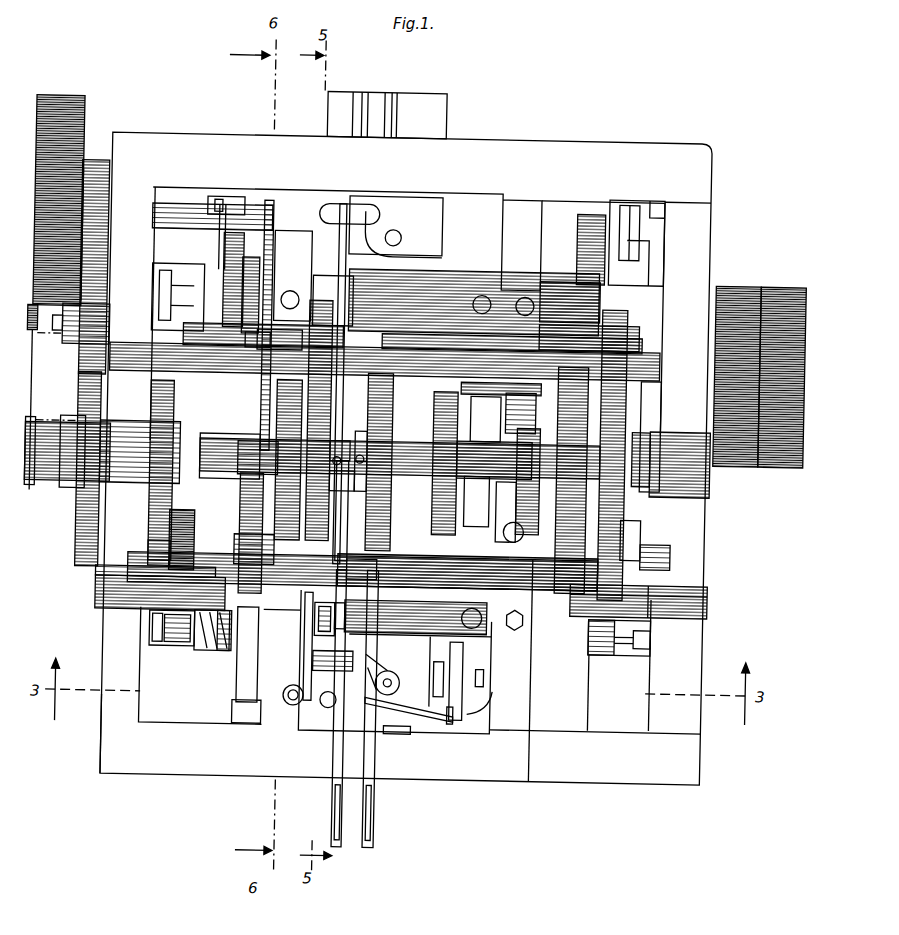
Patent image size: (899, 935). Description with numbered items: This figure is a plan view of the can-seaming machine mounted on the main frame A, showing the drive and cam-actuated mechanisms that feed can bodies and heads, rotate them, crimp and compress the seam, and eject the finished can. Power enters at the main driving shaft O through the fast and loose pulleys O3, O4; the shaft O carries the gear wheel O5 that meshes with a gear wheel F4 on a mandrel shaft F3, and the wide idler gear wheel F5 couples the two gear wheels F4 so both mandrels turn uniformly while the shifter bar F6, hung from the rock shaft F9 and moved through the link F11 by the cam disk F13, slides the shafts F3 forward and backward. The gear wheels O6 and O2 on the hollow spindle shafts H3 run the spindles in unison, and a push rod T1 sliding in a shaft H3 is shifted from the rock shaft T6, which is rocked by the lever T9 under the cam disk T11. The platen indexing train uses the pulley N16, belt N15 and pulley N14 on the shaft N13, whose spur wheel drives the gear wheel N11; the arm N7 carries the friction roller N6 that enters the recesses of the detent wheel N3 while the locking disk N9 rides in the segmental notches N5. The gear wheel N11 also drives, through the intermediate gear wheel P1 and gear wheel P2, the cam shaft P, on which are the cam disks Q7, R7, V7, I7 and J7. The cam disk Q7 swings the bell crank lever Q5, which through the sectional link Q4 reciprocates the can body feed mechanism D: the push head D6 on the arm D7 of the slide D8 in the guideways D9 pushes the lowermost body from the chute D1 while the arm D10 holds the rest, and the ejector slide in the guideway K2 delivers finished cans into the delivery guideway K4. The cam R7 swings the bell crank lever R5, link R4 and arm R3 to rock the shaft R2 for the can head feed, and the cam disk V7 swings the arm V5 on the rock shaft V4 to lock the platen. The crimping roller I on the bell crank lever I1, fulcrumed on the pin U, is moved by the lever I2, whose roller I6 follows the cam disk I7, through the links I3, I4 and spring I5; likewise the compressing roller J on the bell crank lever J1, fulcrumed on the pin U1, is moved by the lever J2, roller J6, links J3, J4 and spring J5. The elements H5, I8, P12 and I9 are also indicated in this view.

The delivery guideway K4 is at (387, 101).
The pulley N14 is at (79, 116).
The gear wheel N11 is at (98, 180).
The shaft N13 is at (175, 208).
The friction roller N6 is at (232, 201).
The arm N7 is at (221, 259).
The locking disk N9 is at (241, 271).
The lever T9 is at (179, 273).
The link J4 is at (327, 208).
The spring J5 is at (376, 218).
The lever J2 is at (281, 282).
The compressing roller J is at (335, 300).
The bell crank lever J1 is at (163, 349).
The pin U1 is at (441, 289).
The arm R3 is at (585, 221).
The link R4 is at (581, 252).
The rock shaft R2 is at (548, 287).
The link F11 is at (545, 303).
The main driving shaft O is at (638, 357).
The fast pulley O3 is at (737, 281).
The loose pulley O4 is at (784, 281).
The intermediate gear wheel P1 is at (94, 336).
The belt N15 is at (31, 375).
The detent wheel N3 is at (258, 318).
The gear wheel O2 is at (262, 334).
The segmental notches N5 is at (170, 424).
The pulley N16 is at (29, 492).
The cam disk Q7 is at (180, 440).
The cam shaft P is at (512, 440).
The clutch H5 is at (229, 456).
The cam disk T11 is at (257, 458).
The gear I8 is at (263, 502).
The link I3 is at (284, 442).
The bell crank lever I1 is at (330, 432).
The cam disk I7 is at (331, 448).
The friction roller I6 is at (330, 479).
The lever I2 is at (348, 507).
The cam disk J7 is at (369, 447).
The friction roller J6 is at (369, 476).
The link J3 is at (395, 413).
The cam disk V7 is at (435, 506).
The guideway K2 is at (472, 432).
The gear wheel O5 is at (518, 404).
The gear P12 is at (522, 468).
The cam disk F13 is at (481, 501).
The arm V5 is at (500, 535).
The idler gear wheel F5 is at (582, 469).
The rock shaft V4 is at (422, 565).
The cam R7 is at (612, 421).
The bell crank lever R5 is at (619, 507).
The shifter bar F6 is at (627, 530).
The shaft F3 is at (657, 552).
The gear wheel F4 is at (563, 587).
The rock shaft F9 is at (610, 652).
The pin U is at (380, 618).
The block I9 is at (332, 612).
The gear wheel O6 is at (264, 557).
The bell crank lever Q5 is at (203, 590).
The push rod T1 is at (162, 538).
The shaft H3 is at (150, 554).
The gear wheel P2 is at (79, 550).
The rock shaft T6 is at (182, 652).
The sectional link Q4 is at (230, 656).
The spring I5 is at (305, 694).
The link I4 is at (295, 705).
The crimping roller I is at (308, 665).
The push head D6 is at (394, 672).
The guideways D9 is at (497, 694).
The arm D10 is at (372, 740).
The chute D1 is at (381, 761).
The arm D7 is at (450, 722).
The slide D8 is at (462, 722).
The can body feed mechanism D is at (341, 684).
The main frame A is at (110, 733).